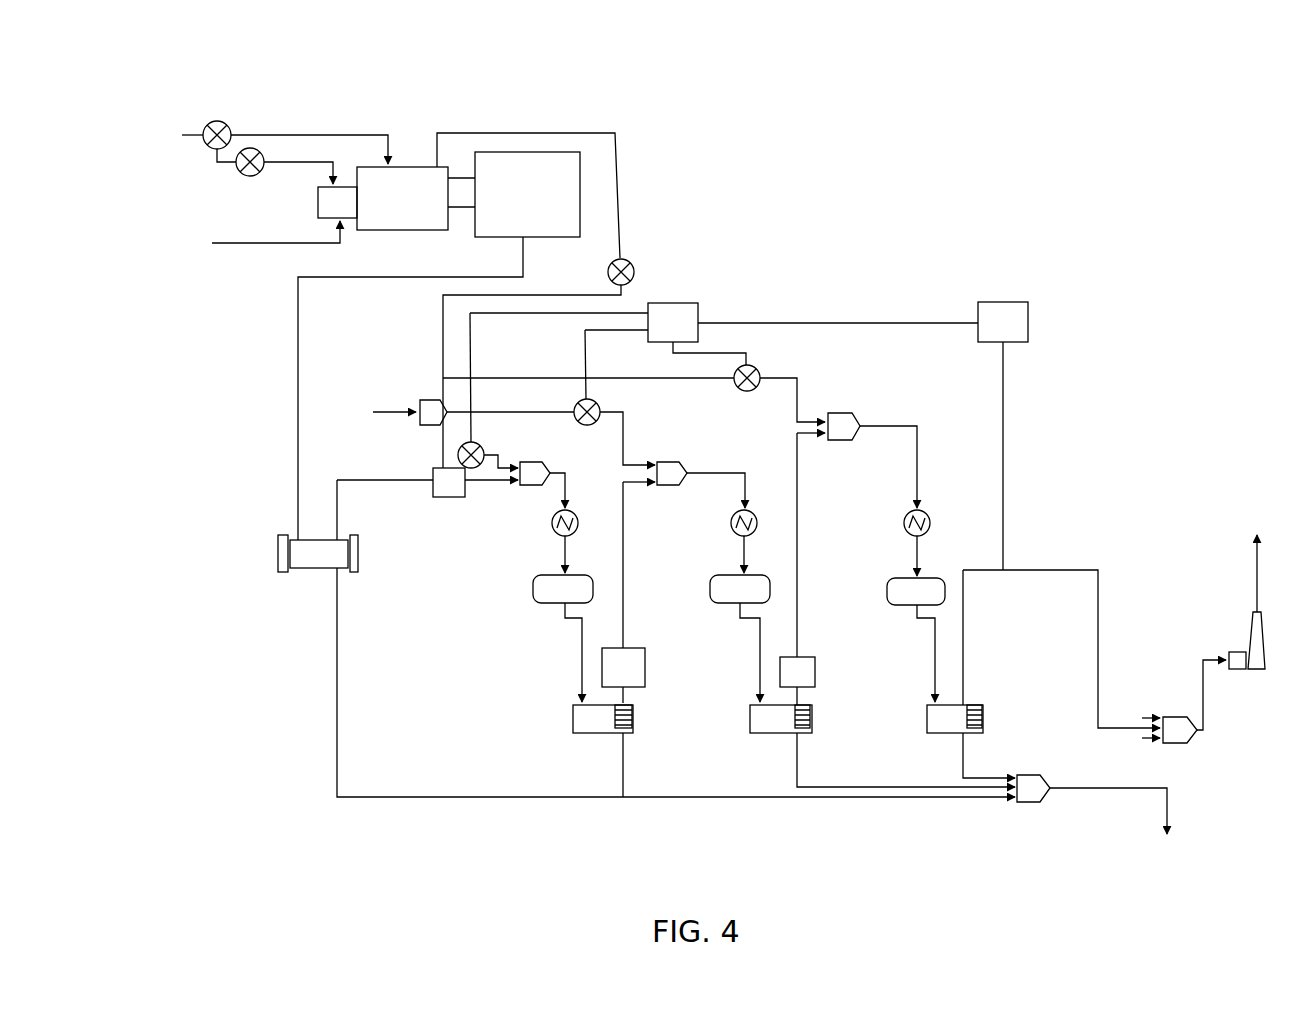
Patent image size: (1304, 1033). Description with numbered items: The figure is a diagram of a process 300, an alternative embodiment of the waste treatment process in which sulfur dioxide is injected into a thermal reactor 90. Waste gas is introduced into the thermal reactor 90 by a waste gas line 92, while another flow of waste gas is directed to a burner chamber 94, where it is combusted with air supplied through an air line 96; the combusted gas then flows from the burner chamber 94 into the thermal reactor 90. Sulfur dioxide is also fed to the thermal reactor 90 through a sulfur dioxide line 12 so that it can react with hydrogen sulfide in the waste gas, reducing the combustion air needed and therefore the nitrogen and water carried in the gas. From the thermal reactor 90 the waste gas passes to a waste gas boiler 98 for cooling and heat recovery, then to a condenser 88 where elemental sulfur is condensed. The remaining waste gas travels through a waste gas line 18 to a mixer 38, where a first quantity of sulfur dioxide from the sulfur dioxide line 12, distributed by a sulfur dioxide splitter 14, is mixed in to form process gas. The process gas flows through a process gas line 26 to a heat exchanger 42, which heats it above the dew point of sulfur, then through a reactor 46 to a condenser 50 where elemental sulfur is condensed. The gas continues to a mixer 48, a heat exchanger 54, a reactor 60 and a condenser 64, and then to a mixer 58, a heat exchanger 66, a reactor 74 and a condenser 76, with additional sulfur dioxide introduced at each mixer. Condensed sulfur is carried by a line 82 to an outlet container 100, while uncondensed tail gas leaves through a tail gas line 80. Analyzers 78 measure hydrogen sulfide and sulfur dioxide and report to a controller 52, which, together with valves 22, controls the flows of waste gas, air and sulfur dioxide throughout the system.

The sulfur dioxide line 12 is at (616, 185).
The sulfur dioxide splitter 14 is at (433, 400).
The waste gas line 18 is at (298, 328).
The valves 22 is at (216, 122).
The process gas line 26 is at (570, 473).
The mixer 38 is at (518, 490).
The heat exchanger 42 is at (552, 528).
The reactor 46 is at (533, 592).
The mixer 48 is at (670, 460).
The condenser 50 is at (573, 722).
The controller 52 is at (675, 303).
The heat exchanger 54 is at (731, 528).
The mixer 58 is at (838, 413).
The reactor 60 is at (710, 592).
The condenser 64 is at (750, 722).
The heat exchanger 66 is at (904, 528).
The reactor 74 is at (887, 592).
The condenser 76 is at (927, 722).
The analyzer 78 is at (1008, 302).
The tail gas line 80 is at (1100, 590).
The line 82 is at (502, 797).
The condenser 88 is at (323, 570).
The thermal reactor 90 is at (417, 163).
The waste gas line 92 is at (313, 132).
The burner chamber 94 is at (318, 205).
The air line 96 is at (257, 243).
The waste gas boiler 98 is at (477, 235).
The outlet container 100 is at (1032, 803).
The process 300 is at (930, 168).